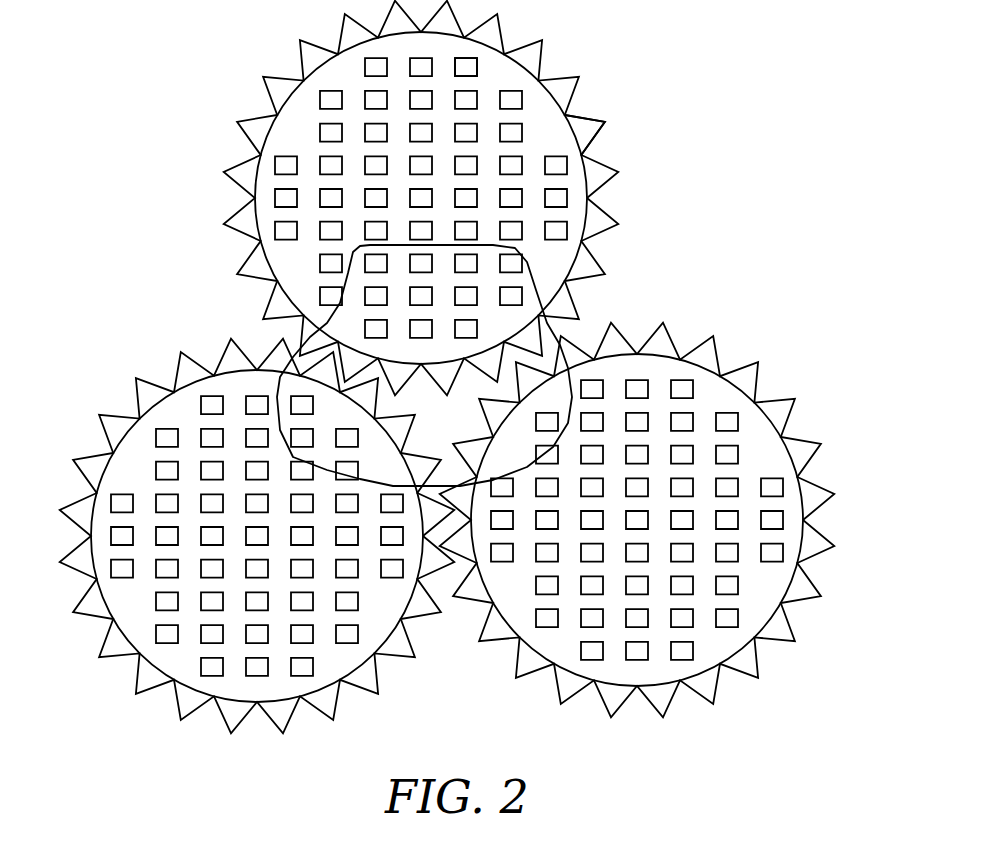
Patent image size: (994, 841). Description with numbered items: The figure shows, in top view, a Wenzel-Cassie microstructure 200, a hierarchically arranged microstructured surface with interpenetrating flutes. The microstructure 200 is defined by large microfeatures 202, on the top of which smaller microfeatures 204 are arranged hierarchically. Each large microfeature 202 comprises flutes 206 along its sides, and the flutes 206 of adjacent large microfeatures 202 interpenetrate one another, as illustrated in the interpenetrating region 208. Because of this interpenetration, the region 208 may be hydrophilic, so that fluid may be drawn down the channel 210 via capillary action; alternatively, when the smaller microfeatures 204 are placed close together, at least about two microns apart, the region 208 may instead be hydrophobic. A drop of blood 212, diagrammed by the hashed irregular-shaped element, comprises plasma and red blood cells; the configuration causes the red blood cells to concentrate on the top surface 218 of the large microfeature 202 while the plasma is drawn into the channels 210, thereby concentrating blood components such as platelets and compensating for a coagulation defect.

The Wenzel-Cassie microstructure 200 is at (433, 367).
The large microfeature 202 is at (471, 197).
The smaller microfeature 204 is at (463, 67).
The flute 206 is at (612, 158).
The interpenetrating region 208 is at (588, 327).
The channel 210 is at (300, 355).
The drop of blood 212 is at (373, 483).
The top surface 218 is at (387, 280).